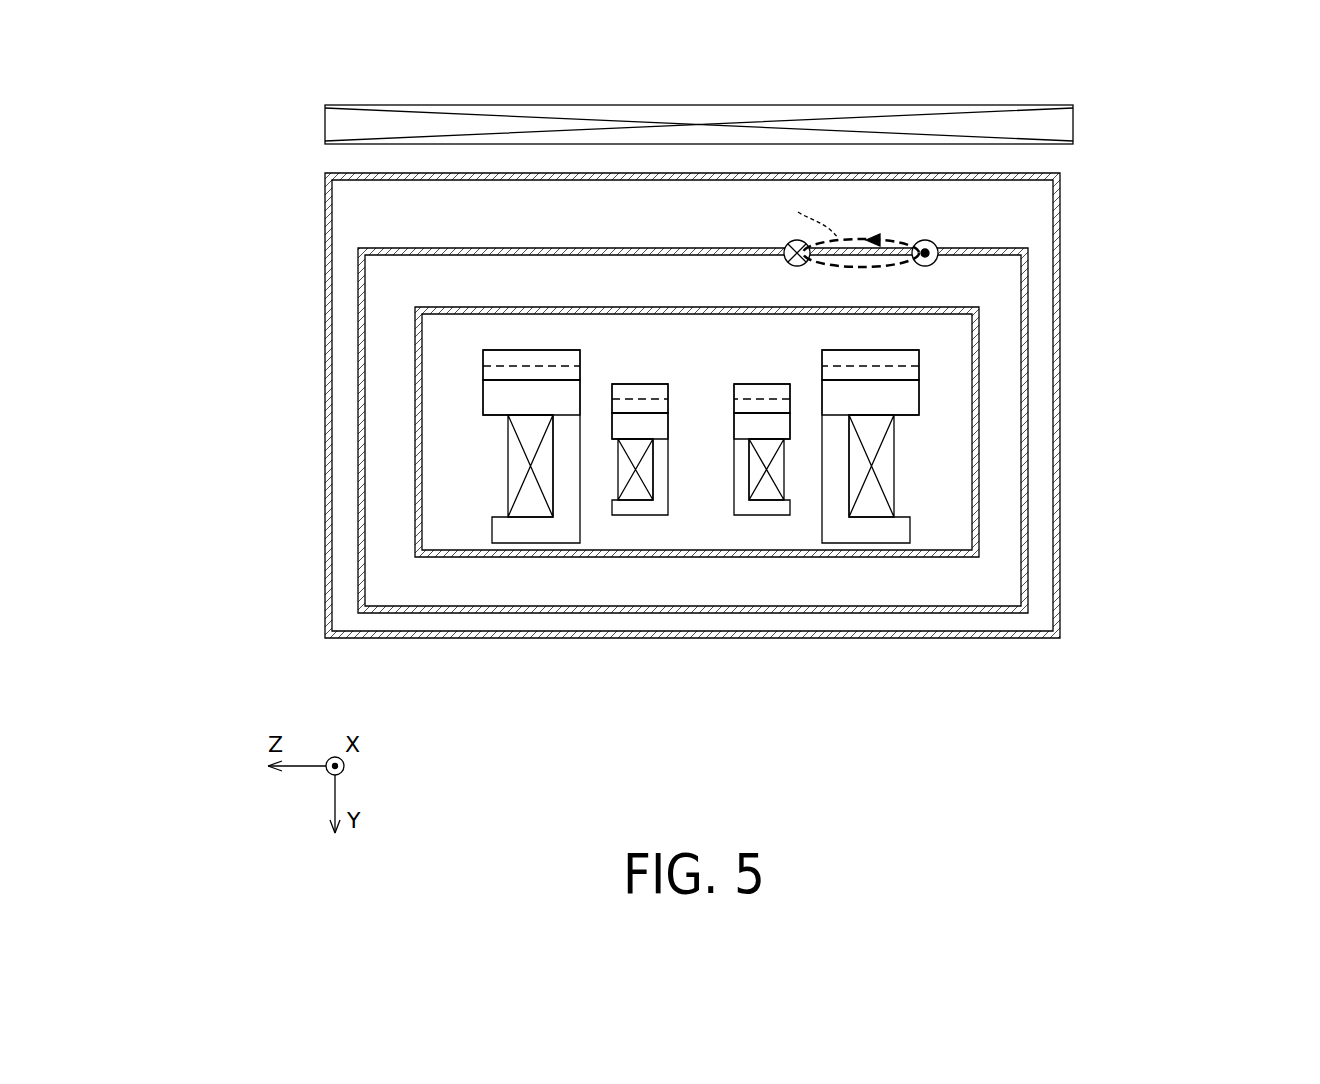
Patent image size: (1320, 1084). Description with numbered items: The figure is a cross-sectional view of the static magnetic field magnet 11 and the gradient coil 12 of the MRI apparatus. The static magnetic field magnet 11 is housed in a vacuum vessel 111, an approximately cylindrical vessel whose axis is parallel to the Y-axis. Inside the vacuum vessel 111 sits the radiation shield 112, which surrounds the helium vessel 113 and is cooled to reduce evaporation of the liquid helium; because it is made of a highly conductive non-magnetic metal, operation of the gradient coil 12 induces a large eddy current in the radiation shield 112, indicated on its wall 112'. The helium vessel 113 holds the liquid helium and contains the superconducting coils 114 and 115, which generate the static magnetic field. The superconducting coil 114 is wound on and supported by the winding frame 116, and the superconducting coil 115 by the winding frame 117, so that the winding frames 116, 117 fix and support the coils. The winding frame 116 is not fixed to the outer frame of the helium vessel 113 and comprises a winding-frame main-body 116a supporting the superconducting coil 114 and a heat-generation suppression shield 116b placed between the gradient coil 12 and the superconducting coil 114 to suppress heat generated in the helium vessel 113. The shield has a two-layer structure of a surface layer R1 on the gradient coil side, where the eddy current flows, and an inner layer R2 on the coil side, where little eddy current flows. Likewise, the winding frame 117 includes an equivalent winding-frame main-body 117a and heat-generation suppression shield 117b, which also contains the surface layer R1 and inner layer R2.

The static magnetic field magnet 11 is at (1157, 235).
The gradient coil 12 is at (1073, 125).
The vacuum vessel 111 is at (467, 638).
The radiation shield 112 is at (693, 477).
The top wall of middle housing 112' is at (864, 217).
The helium vessel 113 is at (633, 557).
The superconducting coil 114 is at (508, 488).
The superconducting coil 115 is at (618, 485).
The winding frame 116 is at (172, 340).
The winding-frame main-body 116a is at (483, 391).
The heat-generation suppression shield 116b is at (255, 325).
The winding frame 117 is at (172, 435).
The winding-frame main-body 117a is at (612, 425).
The heat-generation suppression shield 117b is at (255, 420).
The surface layer R1 is at (612, 391).
The inner layer R2 is at (612, 407).